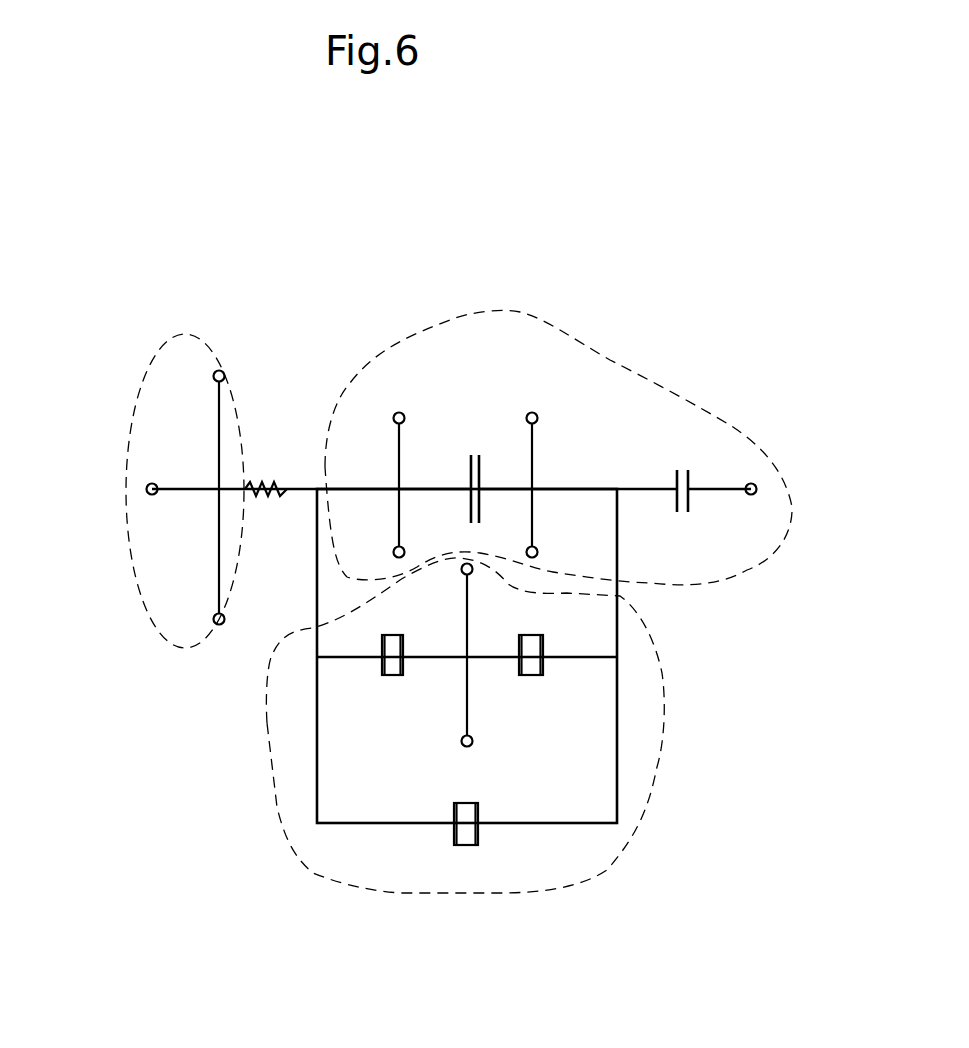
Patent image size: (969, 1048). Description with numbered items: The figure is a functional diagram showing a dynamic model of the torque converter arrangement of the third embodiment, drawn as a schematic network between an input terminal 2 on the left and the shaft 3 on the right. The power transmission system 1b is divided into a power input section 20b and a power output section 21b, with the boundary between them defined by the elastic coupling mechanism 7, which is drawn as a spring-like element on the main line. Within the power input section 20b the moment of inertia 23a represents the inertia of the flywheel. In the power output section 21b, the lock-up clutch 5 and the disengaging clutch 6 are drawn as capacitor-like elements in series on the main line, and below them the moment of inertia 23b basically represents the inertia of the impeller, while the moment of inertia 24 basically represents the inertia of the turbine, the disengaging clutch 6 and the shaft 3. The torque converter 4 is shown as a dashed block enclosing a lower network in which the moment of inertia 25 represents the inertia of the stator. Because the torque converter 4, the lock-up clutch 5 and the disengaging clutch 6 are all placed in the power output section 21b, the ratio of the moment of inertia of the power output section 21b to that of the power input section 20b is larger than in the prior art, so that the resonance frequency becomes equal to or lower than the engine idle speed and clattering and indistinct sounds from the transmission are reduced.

The power transmission system 1b is at (567, 386).
The input terminal 2 is at (147, 486).
The shaft 3 is at (756, 487).
The torque converter 4 is at (663, 700).
The lock-up clutch 5 is at (461, 430).
The disengaging clutch 6 is at (686, 434).
The elastic coupling mechanism 7 is at (265, 465).
The power input section 20b is at (227, 333).
The power output section 21b is at (540, 320).
The moment of inertia 23a is at (219, 578).
The moment of inertia 23b is at (399, 507).
The moment of inertia 24 is at (533, 517).
The moment of inertia 25 is at (467, 705).